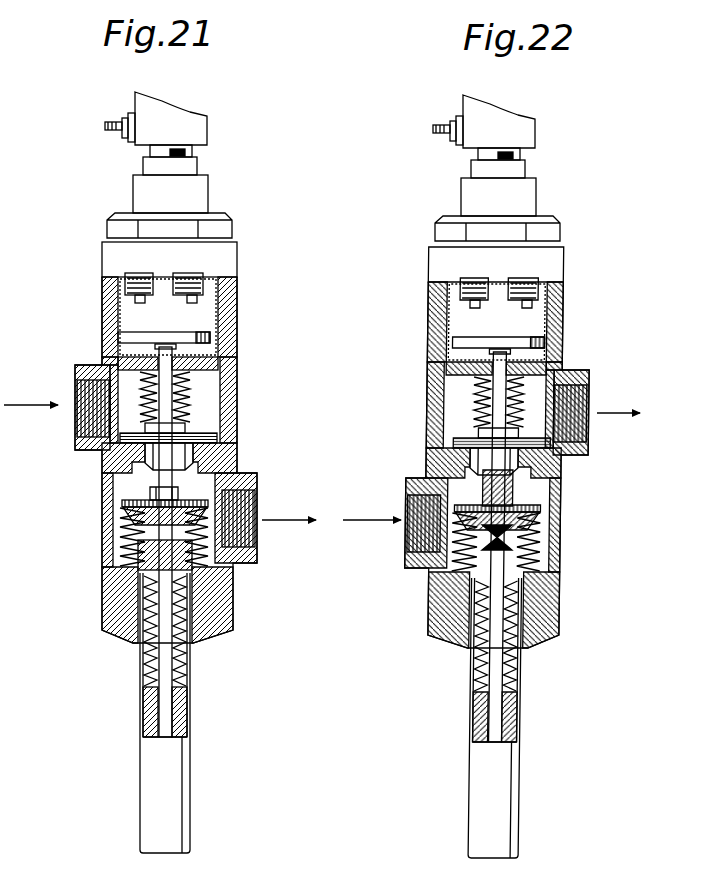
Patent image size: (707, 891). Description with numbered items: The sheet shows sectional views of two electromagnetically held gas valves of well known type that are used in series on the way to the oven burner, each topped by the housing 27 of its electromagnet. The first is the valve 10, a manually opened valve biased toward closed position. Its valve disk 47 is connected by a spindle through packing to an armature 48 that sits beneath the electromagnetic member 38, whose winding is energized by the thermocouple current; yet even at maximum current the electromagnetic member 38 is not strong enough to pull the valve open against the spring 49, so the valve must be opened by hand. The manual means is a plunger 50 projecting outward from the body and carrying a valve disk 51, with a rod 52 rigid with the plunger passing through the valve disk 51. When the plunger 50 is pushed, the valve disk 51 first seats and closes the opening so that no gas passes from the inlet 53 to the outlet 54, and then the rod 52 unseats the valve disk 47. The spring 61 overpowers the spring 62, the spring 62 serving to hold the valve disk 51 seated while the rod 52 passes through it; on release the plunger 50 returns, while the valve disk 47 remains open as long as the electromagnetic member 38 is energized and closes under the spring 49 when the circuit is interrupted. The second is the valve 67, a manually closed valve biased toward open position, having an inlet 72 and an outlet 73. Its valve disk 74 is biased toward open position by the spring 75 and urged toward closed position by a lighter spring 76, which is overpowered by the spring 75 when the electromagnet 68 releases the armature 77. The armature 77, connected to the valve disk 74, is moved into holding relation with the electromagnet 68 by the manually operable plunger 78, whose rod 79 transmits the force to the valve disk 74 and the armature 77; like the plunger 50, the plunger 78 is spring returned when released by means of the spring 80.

In FIG. 21, the solenoid actuator 27 is at (193, 113).
In FIG. 22, the solenoid actuator 27 is at (514, 114).
In FIG. 21, the valve 10 is at (234, 320).
In FIG. 21, the electromagnetic member 38 is at (166, 300).
In FIG. 21, the armature 48 is at (121, 333).
In FIG. 21, the spring 49 is at (191, 397).
In FIG. 21, the valve disk 47 is at (214, 438).
In FIG. 21, the inlet 53 is at (80, 412).
In FIG. 21, the outlet 54 is at (258, 501).
In FIG. 21, the valve disk 51 is at (122, 500).
In FIG. 21, the spring 62 is at (121, 547).
In FIG. 21, the rod 52 is at (162, 603).
In FIG. 21, the spring 61 is at (143, 678).
In FIG. 21, the plunger 50 is at (140, 730).
In FIG. 22, the valve 67 is at (561, 336).
In FIG. 22, the electromagnet 68 is at (498, 301).
In FIG. 22, the armature 77 is at (455, 338).
In FIG. 22, the spring 75 is at (470, 397).
In FIG. 22, the outlet 73 is at (591, 398).
In FIG. 22, the inlet 72 is at (405, 533).
In FIG. 22, the valve disk 74 is at (538, 505).
In FIG. 22, the spring 76 is at (536, 543).
In FIG. 22, the rod 79 is at (492, 660).
In FIG. 22, the spring 80 is at (518, 700).
In FIG. 22, the plunger 78 is at (470, 758).